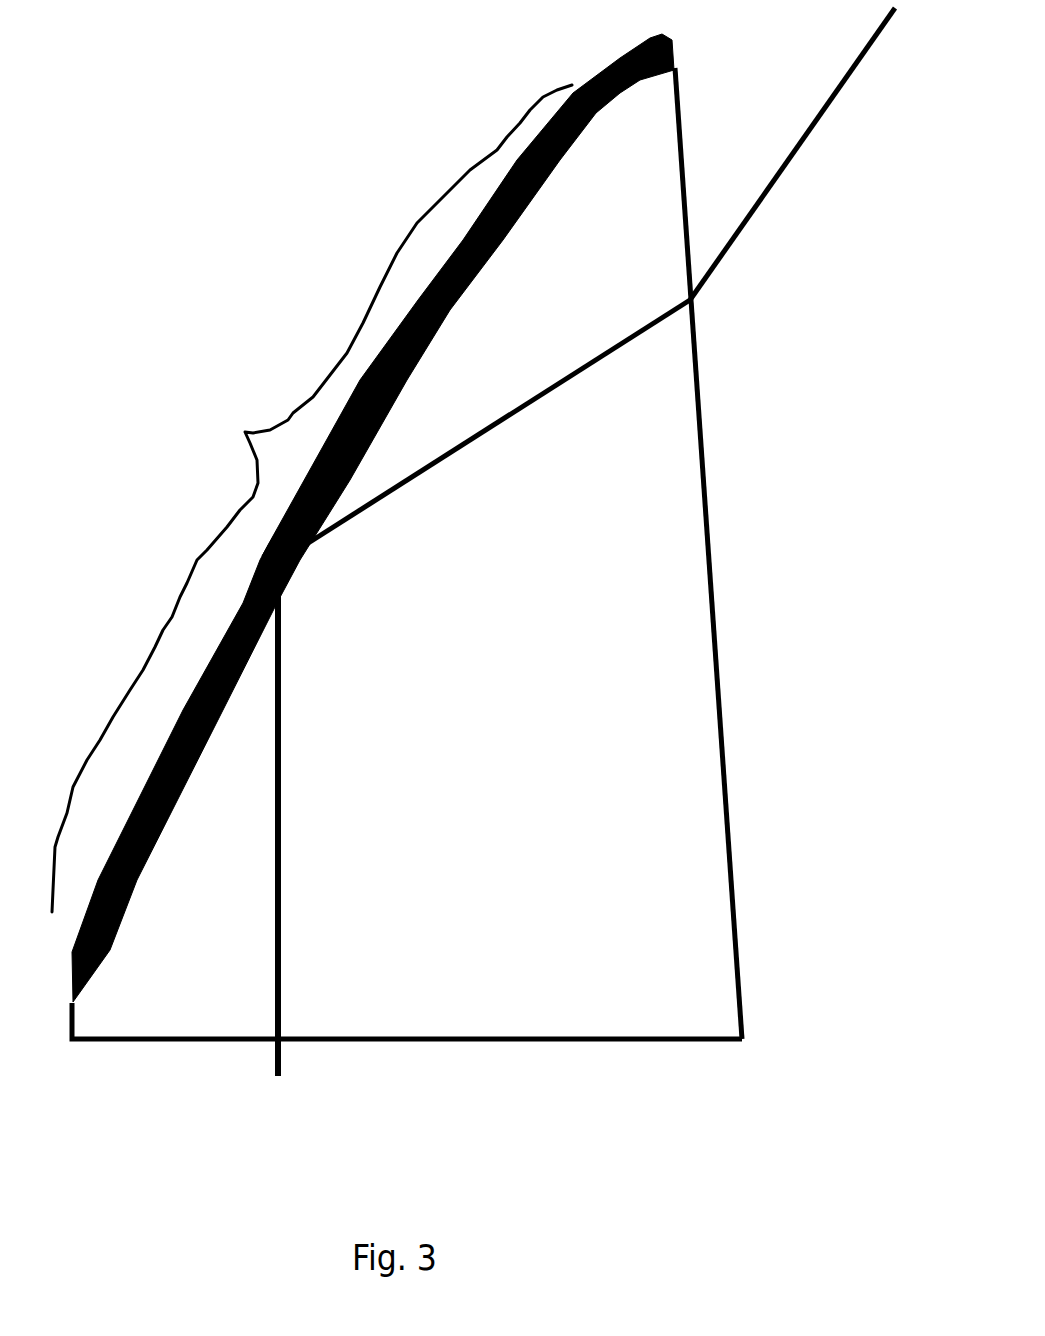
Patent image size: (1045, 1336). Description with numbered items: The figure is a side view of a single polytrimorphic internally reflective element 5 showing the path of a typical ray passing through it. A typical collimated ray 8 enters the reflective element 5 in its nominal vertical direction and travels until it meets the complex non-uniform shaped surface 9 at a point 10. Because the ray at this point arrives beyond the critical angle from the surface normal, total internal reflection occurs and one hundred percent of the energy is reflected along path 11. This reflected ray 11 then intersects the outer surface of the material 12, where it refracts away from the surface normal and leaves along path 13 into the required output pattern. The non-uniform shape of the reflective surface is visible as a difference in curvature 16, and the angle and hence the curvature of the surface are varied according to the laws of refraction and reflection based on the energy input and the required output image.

The internally reflective element 5 is at (602, 1097).
The collimated ray 8 is at (280, 801).
The surface 9 is at (215, 655).
The point 10 is at (270, 545).
The path 11 is at (483, 436).
The outer surface of the material 12 is at (712, 573).
The path 13 is at (793, 153).
The difference in curvature 16 is at (312, 498).